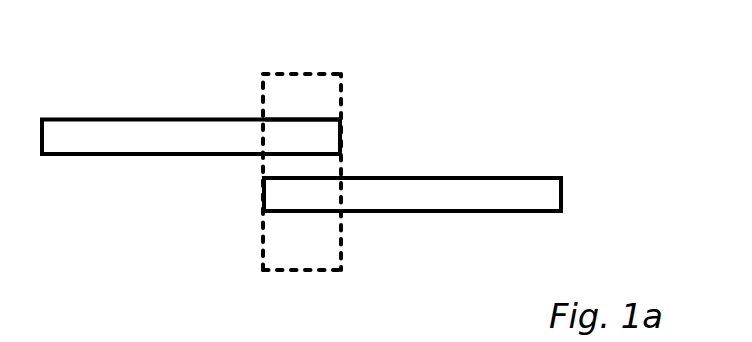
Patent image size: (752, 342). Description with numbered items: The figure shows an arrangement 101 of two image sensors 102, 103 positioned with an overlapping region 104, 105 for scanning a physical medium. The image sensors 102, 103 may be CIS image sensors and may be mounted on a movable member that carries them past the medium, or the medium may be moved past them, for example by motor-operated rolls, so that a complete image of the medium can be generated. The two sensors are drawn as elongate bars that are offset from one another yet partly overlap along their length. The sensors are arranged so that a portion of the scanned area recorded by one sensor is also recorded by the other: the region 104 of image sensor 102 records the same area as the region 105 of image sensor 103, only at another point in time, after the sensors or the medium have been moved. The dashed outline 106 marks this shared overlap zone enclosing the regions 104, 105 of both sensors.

The device / arrangement 101 is at (622, 40).
The image sensor 102 is at (158, 158).
The image sensor 103 is at (421, 213).
The region of image sensor 104 is at (315, 117).
The region of image sensor 105 is at (302, 213).
The overlap / coupling region 106 is at (332, 72).